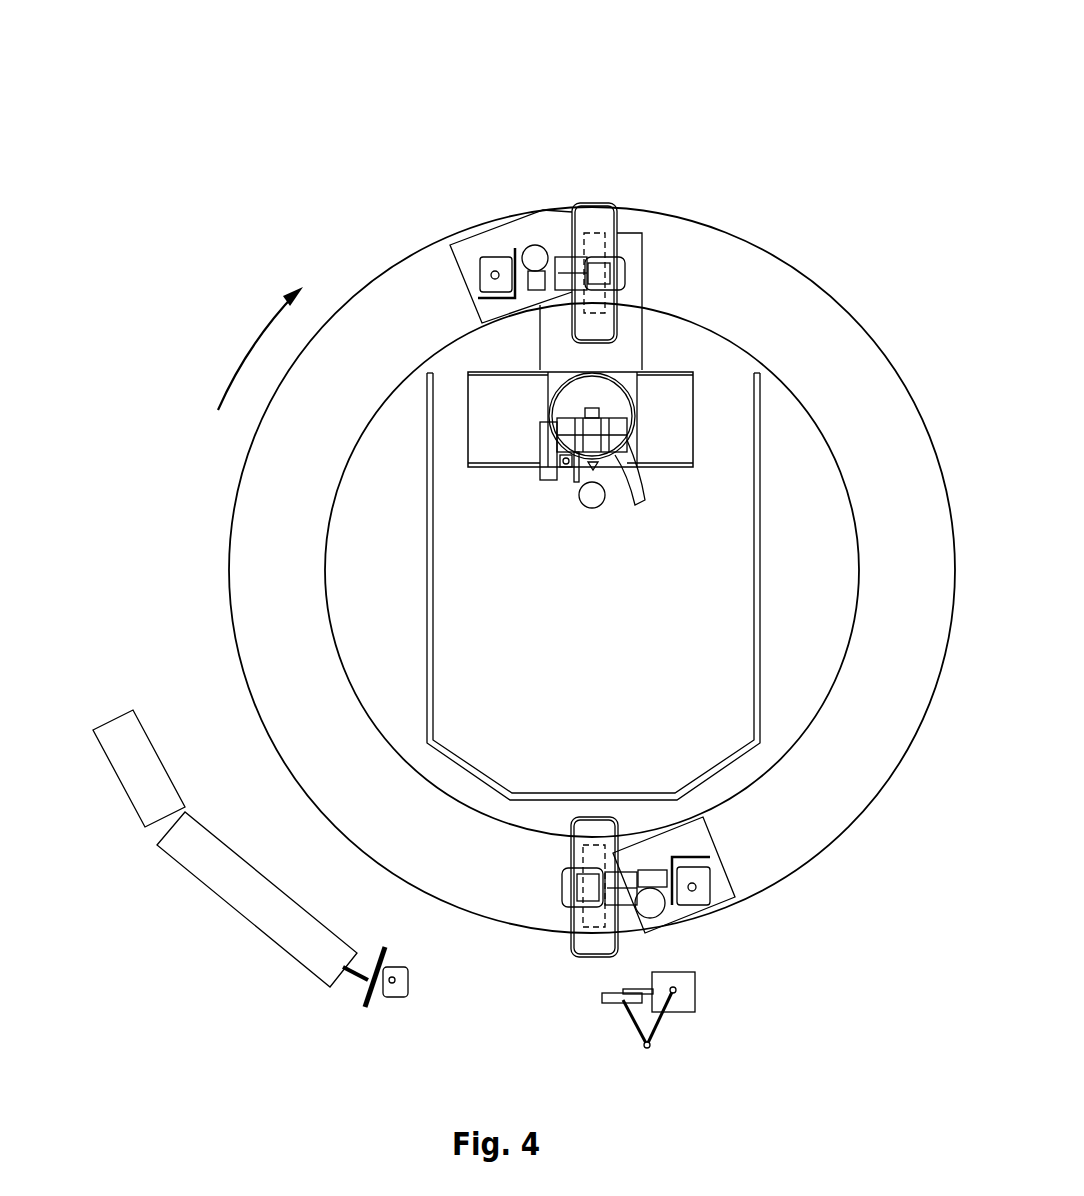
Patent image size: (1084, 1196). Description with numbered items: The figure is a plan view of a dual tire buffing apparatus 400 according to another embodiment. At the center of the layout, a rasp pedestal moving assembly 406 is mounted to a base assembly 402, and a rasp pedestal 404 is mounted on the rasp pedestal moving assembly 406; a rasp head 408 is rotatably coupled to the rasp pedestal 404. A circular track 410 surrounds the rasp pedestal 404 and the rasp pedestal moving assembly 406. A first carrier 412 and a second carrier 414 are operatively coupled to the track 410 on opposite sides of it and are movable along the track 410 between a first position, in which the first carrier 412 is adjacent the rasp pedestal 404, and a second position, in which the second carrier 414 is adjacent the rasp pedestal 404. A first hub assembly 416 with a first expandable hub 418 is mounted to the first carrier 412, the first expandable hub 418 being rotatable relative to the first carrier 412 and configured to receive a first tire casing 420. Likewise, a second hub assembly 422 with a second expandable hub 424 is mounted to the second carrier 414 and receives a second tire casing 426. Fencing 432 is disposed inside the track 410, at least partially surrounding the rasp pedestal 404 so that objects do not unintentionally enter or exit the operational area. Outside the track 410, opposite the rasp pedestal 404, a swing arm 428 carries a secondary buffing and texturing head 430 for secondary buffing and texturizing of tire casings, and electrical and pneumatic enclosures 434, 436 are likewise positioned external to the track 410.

The dual tire buffing apparatus 400 is at (352, 62).
The base assembly 402 is at (400, 588).
The rasp pedestal 404 is at (542, 475).
The rasp pedestal moving assembly 406 is at (673, 450).
The rasp head 408 is at (590, 407).
The circular track 410 is at (805, 320).
The first carrier 412 is at (477, 243).
The second carrier 414 is at (720, 900).
The first hub assembly 416 is at (527, 228).
The first expandable hub 418 is at (627, 265).
The first tire casing 420 is at (603, 213).
The second hub assembly 422 is at (673, 930).
The second expandable hub 424 is at (577, 885).
The second tire casing 426 is at (583, 943).
The swing arm 428 is at (653, 1045).
The secondary buffing and texturing head 430 is at (613, 1002).
The fencing 432 is at (435, 670).
The electrical and pneumatic enclosure 434 is at (267, 920).
The electrical and pneumatic enclosure 436 is at (135, 780).